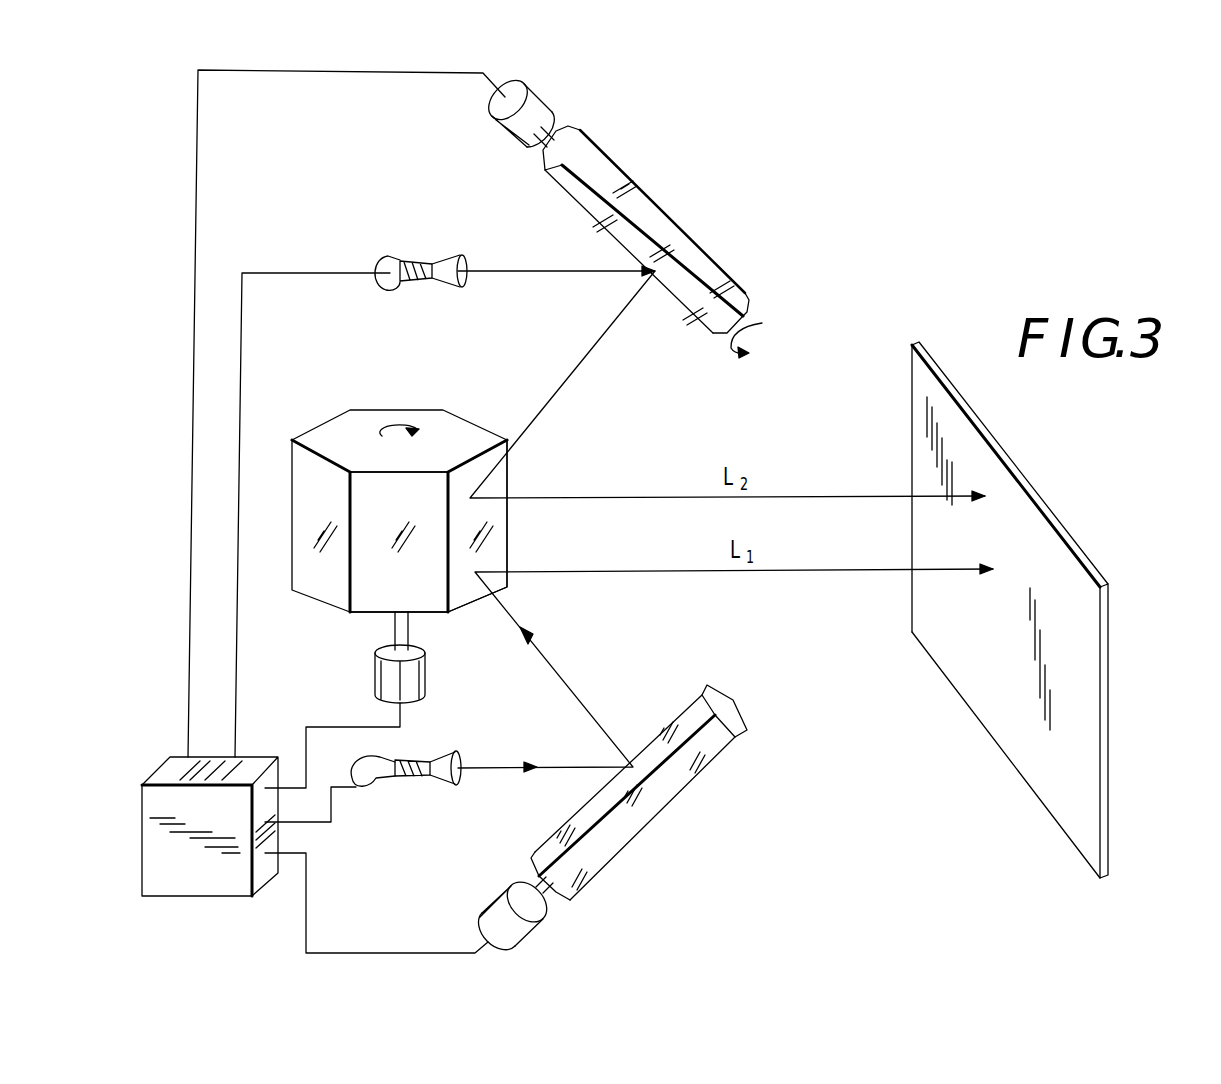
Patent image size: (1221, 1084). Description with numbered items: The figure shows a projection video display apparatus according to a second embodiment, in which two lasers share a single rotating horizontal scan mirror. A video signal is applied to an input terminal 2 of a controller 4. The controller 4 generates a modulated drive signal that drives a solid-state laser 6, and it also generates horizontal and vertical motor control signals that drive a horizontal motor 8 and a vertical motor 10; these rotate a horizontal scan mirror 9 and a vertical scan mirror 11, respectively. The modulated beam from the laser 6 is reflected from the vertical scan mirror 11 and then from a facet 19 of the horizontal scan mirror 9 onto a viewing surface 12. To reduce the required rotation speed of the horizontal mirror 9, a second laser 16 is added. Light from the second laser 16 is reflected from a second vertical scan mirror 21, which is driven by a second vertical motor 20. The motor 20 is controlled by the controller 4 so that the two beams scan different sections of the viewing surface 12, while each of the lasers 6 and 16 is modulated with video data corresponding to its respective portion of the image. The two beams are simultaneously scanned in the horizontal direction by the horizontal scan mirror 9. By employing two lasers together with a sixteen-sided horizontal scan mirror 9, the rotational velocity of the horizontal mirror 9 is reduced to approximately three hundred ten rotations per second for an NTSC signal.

The input terminal 2 is at (142, 840).
The controller 4 is at (156, 900).
The solid-state laser 6 is at (420, 780).
The horizontal motor 8 is at (427, 689).
The horizontal scan mirror 9 is at (316, 430).
The vertical motor 10 is at (527, 938).
The vertical scan mirror 11 is at (612, 858).
The viewing surface 12 is at (1112, 742).
The second laser 16 is at (430, 258).
The mirror face 19 is at (466, 596).
The second vertical motor 20 is at (548, 95).
The second vertical scan mirror 21 is at (697, 248).